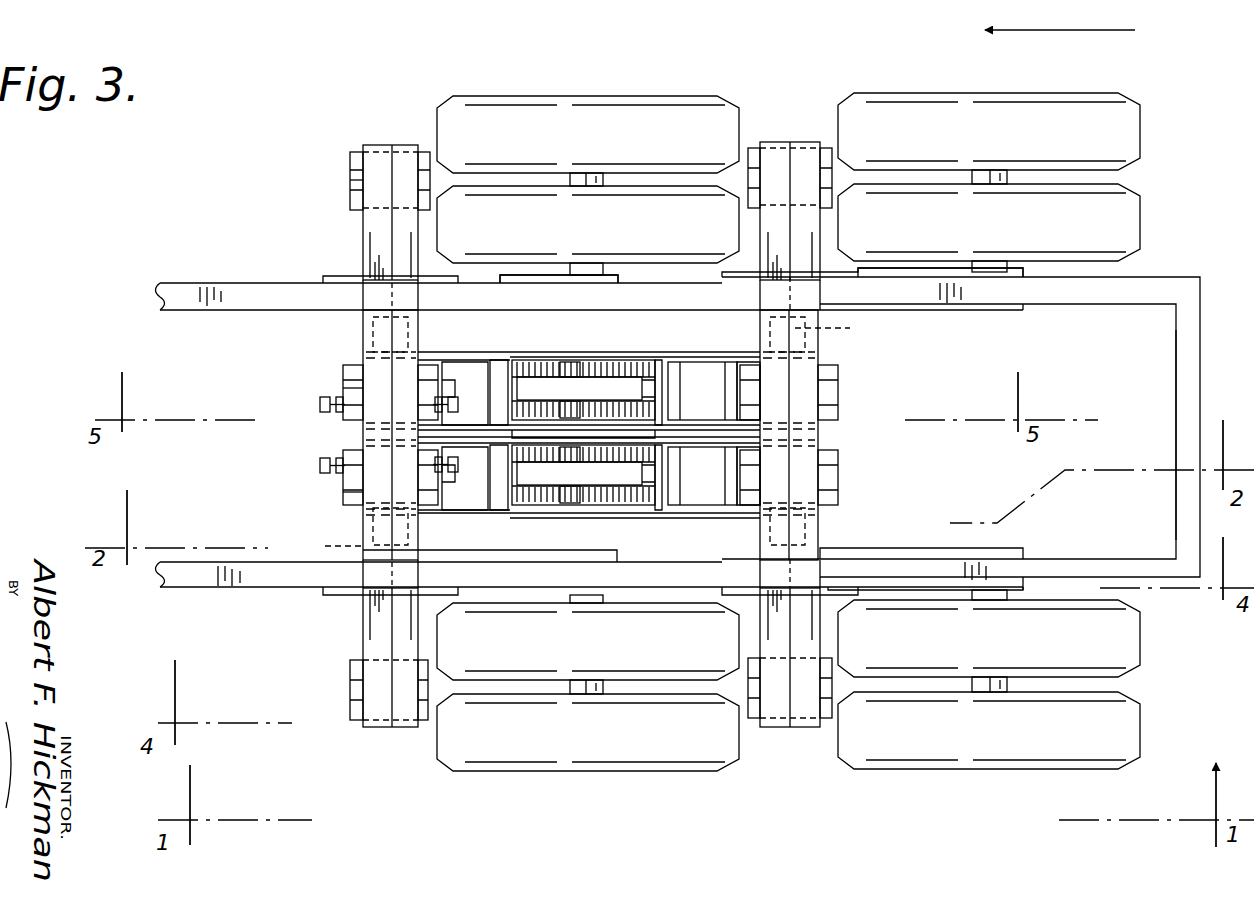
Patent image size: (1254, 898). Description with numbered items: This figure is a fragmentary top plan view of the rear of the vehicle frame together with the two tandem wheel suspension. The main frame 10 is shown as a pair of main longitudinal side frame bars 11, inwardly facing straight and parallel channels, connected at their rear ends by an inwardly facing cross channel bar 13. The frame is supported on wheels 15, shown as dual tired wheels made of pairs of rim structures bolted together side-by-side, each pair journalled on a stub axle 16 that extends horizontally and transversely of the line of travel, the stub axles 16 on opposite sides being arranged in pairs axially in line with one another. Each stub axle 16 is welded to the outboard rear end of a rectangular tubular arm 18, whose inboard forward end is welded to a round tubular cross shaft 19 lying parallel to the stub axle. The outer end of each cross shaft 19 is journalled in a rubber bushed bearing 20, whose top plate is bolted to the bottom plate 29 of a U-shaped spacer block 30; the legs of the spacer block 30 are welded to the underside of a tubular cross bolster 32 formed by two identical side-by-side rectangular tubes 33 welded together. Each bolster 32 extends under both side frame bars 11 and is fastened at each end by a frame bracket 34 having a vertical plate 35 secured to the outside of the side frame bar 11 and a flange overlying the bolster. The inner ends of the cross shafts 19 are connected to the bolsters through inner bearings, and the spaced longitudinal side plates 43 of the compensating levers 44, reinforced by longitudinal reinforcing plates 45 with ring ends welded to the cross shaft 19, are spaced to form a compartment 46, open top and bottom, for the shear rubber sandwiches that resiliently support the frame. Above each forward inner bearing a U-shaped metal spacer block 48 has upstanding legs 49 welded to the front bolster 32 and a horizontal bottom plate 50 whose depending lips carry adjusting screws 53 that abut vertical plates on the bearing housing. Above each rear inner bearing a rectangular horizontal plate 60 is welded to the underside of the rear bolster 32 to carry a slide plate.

The main frame 10 is at (1178, 270).
The main longitudinal side frame bar 11 is at (165, 282).
The cross channel bar 13 is at (1176, 390).
The wheels 15 is at (524, 120).
The stub axle 16 is at (586, 178).
The arm 18 is at (552, 311).
The cross shaft 19 is at (589, 437).
The bearing 20 is at (343, 152).
The bottom plate 29 is at (348, 203).
The U-shaped spacer block 30 is at (346, 182).
The cross bolster 32 is at (358, 330).
The tubes 33 is at (398, 148).
The frame bracket 34 is at (338, 274).
The vertical plate 35 is at (340, 303).
The side plates 43 is at (520, 352).
The compensating lever 44 is at (625, 352).
The reinforcing plate 45 is at (458, 352).
The compartment 46 is at (676, 380).
The U-shaped metal spacer block 48 is at (342, 378).
The upstanding legs 49 is at (343, 492).
The horizontal bottom plate 50 is at (343, 388).
The adjusting screw 53 is at (318, 405).
The rectangular horizontal plate 60 is at (838, 380).